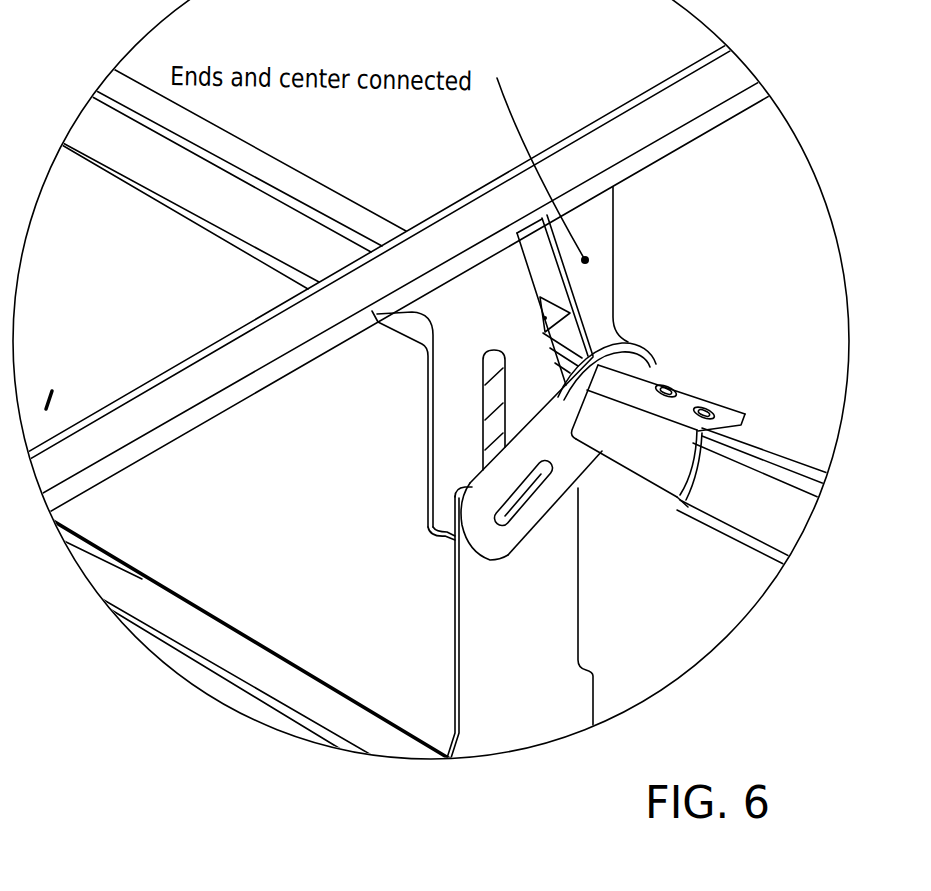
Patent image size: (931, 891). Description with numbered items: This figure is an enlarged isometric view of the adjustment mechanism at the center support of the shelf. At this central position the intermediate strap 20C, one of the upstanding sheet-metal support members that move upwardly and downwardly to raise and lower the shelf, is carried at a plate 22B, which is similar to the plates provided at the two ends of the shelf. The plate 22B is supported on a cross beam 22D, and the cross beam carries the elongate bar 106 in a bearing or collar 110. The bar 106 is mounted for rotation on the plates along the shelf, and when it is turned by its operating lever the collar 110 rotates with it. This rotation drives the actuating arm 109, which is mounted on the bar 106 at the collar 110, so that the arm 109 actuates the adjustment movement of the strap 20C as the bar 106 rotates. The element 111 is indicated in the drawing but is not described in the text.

The cross beam 22D is at (208, 373).
The plate 22B is at (608, 254).
The intermediate strap 20C is at (480, 632).
The actuating arm 109 is at (577, 486).
The collar 110 is at (640, 376).
The pivot collar 111 is at (643, 313).
The bar 106 is at (747, 448).